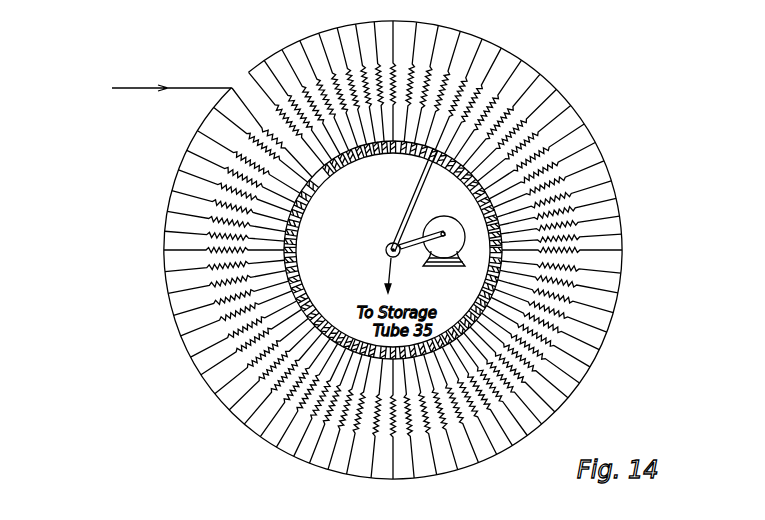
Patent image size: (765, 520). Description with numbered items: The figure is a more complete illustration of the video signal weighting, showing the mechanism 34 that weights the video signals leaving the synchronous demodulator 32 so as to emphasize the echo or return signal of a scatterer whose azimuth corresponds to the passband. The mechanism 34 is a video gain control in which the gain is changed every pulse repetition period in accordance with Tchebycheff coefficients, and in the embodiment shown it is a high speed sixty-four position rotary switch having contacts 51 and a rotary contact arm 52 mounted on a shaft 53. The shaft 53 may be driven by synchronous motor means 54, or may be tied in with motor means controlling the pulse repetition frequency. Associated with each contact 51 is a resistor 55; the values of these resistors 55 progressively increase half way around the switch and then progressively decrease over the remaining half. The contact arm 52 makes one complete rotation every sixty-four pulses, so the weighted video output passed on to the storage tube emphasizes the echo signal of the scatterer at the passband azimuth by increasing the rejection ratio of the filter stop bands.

The mechanism 34 is at (399, 250).
The resistor 55 is at (393, 246).
The contacts 51 is at (393, 250).
The rotary contact arm 52 is at (409, 221).
The shaft 53 is at (442, 273).
The synchronous motor means 54 is at (432, 224).
The synchronous demodulator 32 is at (124, 97).